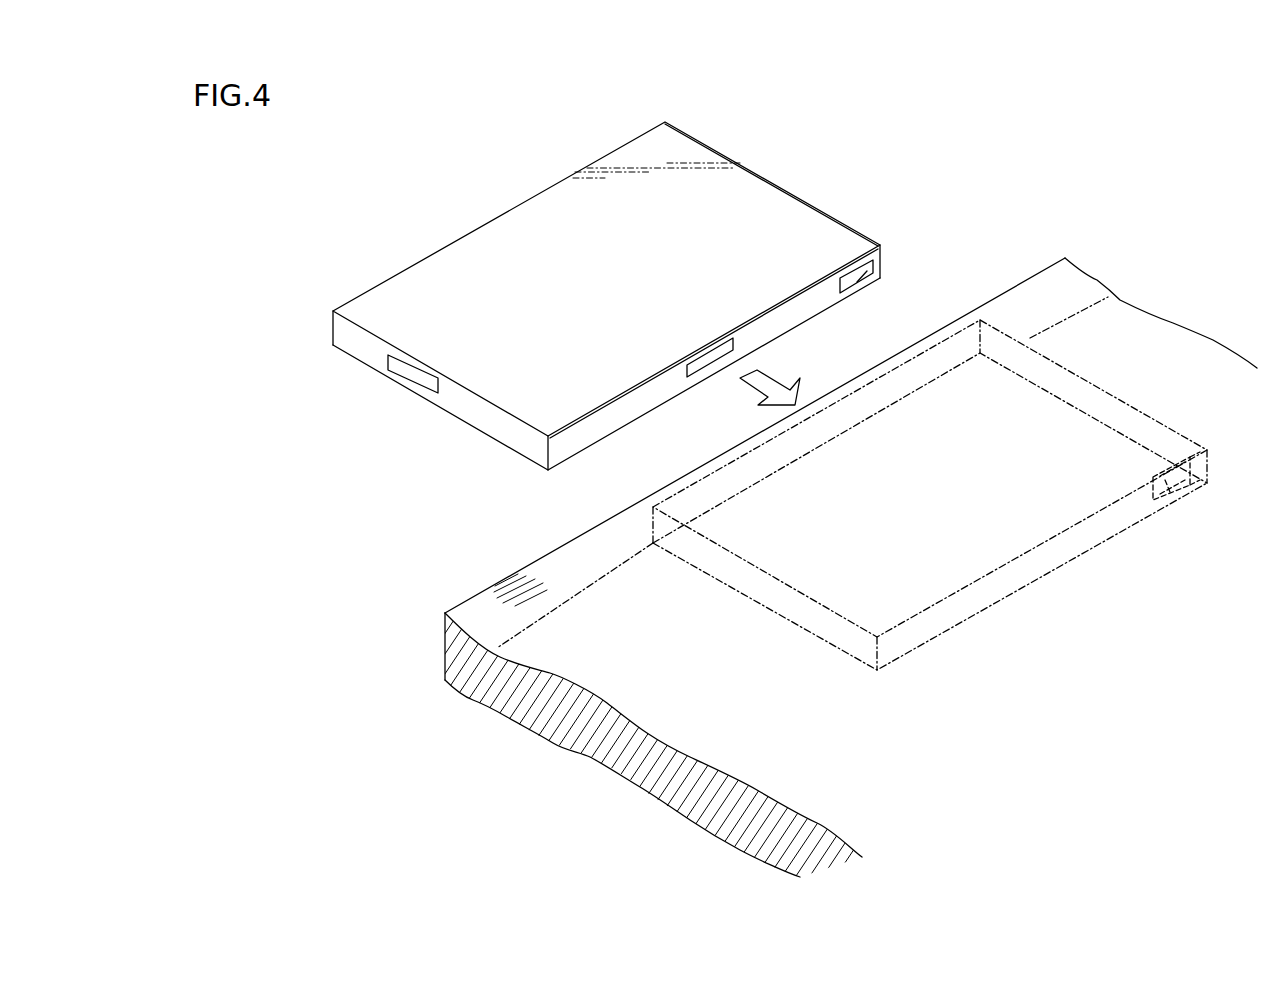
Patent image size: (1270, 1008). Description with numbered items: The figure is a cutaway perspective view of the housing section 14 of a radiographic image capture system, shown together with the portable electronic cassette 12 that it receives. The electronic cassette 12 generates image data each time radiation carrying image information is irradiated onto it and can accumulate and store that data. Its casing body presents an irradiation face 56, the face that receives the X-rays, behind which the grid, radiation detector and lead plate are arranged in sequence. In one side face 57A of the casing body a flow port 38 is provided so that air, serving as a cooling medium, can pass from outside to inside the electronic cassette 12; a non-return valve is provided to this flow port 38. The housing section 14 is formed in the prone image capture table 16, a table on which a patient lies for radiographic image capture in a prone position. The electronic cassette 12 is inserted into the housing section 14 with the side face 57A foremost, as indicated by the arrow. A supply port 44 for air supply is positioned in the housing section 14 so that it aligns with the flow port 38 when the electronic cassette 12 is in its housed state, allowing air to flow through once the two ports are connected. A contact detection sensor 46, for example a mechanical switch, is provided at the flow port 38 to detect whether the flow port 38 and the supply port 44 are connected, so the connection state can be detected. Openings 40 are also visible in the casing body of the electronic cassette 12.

The electronic cassette 12 is at (529, 156).
The irradiation face 56 is at (805, 214).
The side face 57A is at (762, 324).
The flow port 38 is at (872, 286).
The engagement slots 40 is at (410, 380).
The prone image capture table 16 is at (1026, 292).
The housing section 14 is at (985, 471).
The supply port 44 is at (1188, 500).
The contact detection sensor 46 is at (640, 703).